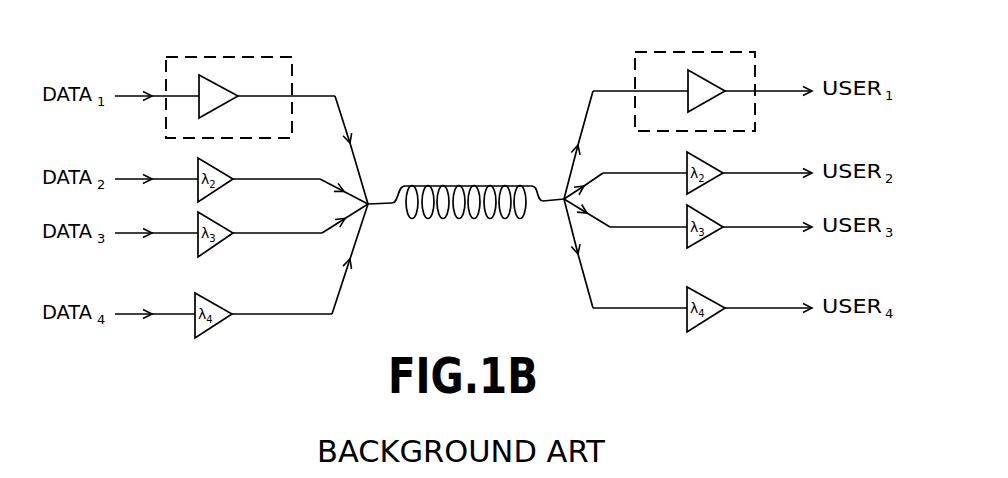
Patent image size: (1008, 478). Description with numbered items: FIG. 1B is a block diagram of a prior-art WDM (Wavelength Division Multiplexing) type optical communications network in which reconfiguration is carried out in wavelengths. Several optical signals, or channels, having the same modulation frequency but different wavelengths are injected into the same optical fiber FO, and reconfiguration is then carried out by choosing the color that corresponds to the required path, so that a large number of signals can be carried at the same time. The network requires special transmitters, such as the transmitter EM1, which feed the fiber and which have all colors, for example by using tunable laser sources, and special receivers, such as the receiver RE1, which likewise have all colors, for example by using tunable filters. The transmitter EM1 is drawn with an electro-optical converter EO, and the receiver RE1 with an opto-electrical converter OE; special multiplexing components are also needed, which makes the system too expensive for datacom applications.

The electro-optical converter EO is at (219, 74).
The transmitter EM1 is at (256, 76).
The opto-electrical converter OE is at (703, 70).
The receiver RE1 is at (720, 69).
The optical fiber FO is at (458, 219).